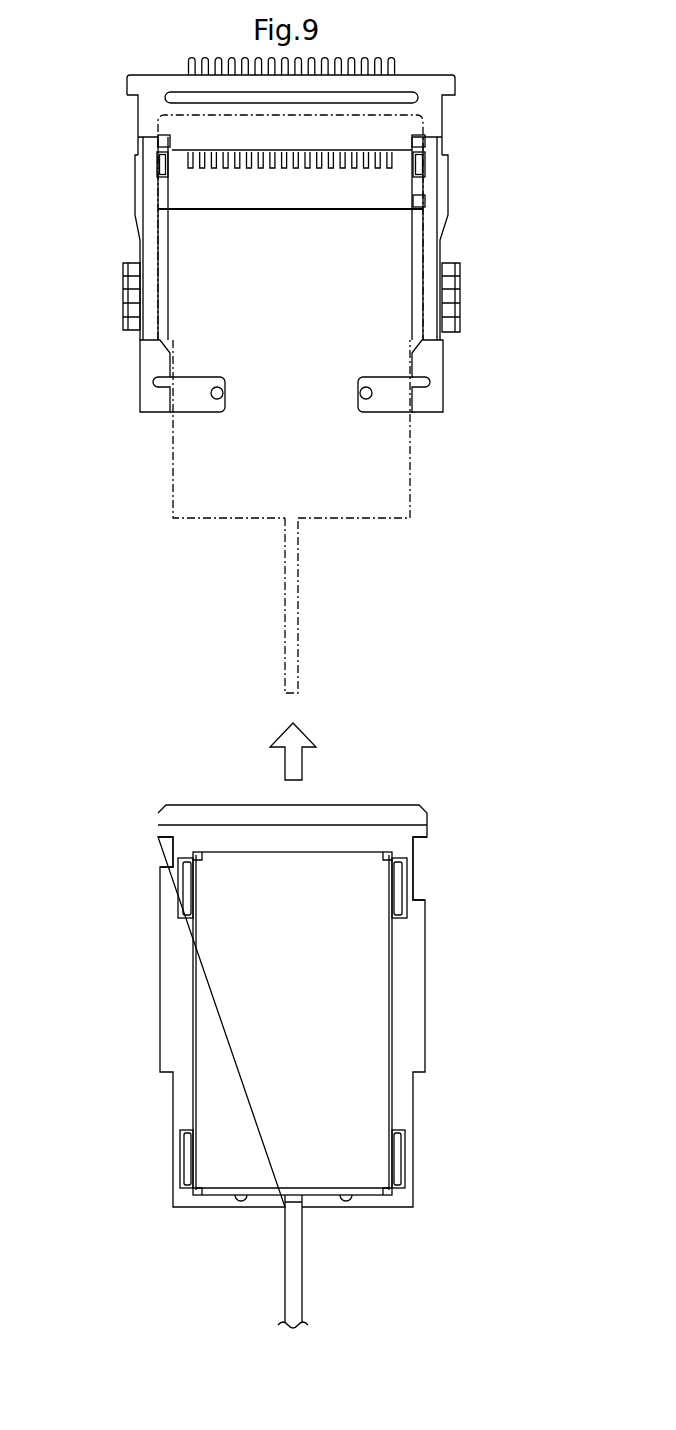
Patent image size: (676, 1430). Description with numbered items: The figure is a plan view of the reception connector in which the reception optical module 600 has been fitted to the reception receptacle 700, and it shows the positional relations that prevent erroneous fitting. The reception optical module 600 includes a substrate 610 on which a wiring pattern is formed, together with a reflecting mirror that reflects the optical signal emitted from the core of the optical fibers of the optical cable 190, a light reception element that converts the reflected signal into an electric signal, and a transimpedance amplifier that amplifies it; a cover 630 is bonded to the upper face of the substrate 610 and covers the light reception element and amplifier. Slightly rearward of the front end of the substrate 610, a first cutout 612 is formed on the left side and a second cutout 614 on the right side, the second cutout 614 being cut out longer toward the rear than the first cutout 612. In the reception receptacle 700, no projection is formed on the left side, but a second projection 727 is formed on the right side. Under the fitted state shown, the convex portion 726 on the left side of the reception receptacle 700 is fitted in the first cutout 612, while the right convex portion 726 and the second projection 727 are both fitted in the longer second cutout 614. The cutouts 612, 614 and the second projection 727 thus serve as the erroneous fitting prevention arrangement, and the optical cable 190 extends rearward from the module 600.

The reception receptacle 700 is at (126, 116).
The first cutout 612 is at (132, 157).
The second cutout 614 is at (452, 158).
The convex portion 726 is at (160, 168).
The second projection 727 is at (425, 203).
The reception optical module 600 is at (157, 470).
The optical cable 190 is at (284, 630).
The substrate 610 is at (180, 970).
The cover 630 is at (323, 1027).